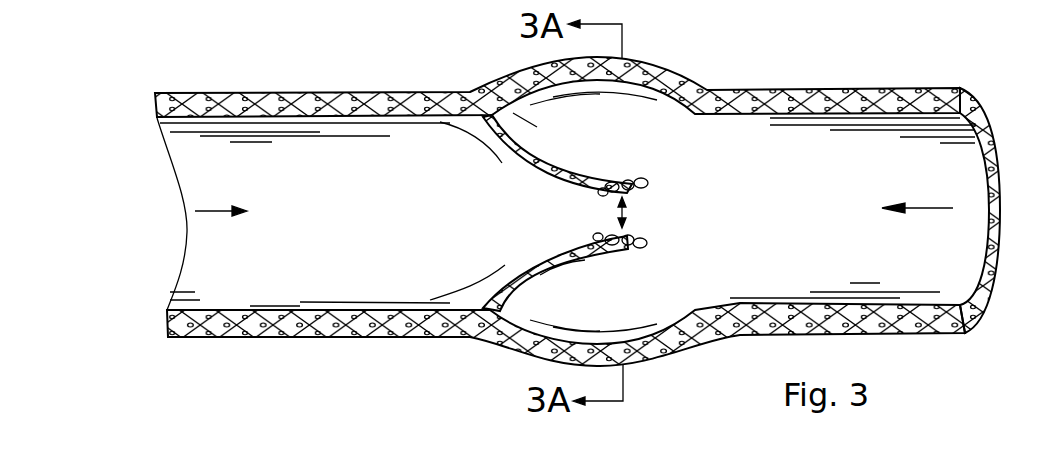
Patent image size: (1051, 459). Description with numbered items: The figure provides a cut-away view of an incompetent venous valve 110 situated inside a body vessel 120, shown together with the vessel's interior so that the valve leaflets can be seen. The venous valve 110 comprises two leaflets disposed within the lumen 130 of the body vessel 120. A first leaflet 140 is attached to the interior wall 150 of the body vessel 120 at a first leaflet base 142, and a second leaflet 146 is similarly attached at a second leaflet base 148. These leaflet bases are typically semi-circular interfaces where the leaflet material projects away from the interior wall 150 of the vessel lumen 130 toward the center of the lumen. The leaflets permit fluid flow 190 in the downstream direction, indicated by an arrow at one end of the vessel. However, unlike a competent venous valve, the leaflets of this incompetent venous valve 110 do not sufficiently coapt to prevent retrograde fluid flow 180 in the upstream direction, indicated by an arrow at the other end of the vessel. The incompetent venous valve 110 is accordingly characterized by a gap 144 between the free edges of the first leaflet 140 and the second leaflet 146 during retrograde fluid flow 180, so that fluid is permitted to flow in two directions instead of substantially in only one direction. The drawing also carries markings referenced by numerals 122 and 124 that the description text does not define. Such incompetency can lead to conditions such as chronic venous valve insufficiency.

The incompetent venous valve 110 is at (390, 365).
The body vessel 120 is at (227, 92).
The second tubular wall portion 122 is at (245, 337).
The second end of tubular body 124 is at (891, 90).
The lumen 130 is at (923, 152).
The first leaflet 140 is at (500, 163).
The first leaflet base 142 is at (483, 98).
The gap 144 is at (624, 217).
The second leaflet 146 is at (518, 285).
The second leaflet base 148 is at (481, 335).
The interior wall 150 is at (327, 92).
The retrograde fluid flow 180 is at (943, 202).
The fluid flow 190 is at (208, 208).